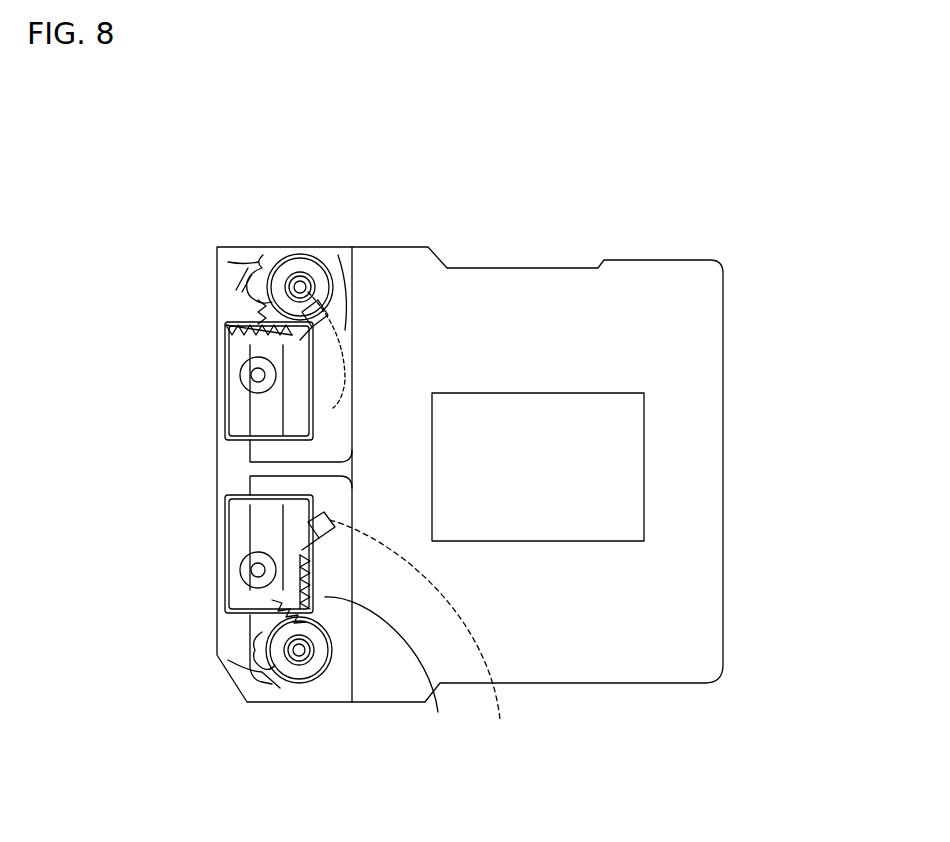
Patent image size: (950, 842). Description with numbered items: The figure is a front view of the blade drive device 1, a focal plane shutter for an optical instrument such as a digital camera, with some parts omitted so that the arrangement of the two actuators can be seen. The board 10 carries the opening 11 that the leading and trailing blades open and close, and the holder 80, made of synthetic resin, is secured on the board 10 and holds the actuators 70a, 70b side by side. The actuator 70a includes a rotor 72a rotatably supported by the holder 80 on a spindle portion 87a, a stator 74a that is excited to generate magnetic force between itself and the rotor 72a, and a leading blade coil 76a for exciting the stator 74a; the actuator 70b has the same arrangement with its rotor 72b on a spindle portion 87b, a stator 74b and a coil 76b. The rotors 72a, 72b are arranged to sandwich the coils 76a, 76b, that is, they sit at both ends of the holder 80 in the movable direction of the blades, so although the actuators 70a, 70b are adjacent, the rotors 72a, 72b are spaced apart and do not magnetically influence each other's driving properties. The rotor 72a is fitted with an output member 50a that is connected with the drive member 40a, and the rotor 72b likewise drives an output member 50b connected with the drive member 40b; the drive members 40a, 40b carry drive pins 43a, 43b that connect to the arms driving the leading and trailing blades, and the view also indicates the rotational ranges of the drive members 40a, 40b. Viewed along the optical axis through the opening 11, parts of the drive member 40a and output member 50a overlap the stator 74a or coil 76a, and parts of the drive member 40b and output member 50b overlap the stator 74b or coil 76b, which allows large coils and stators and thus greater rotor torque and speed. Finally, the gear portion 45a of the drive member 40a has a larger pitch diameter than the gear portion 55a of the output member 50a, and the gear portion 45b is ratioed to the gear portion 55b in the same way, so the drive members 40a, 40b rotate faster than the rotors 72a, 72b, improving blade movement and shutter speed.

The blade drive device 1 is at (712, 200).
The board 10 is at (742, 592).
The opening 11 is at (500, 392).
The drive member 40a is at (255, 570).
The drive member 40b is at (255, 375).
The drive pin 43a is at (500, 720).
The drive pin 43b is at (352, 286).
The gear portion 45a is at (280, 600).
The gear portion 45b is at (245, 335).
The output member 50a is at (355, 633).
The output member 50b is at (250, 287).
The gear portion 55a is at (438, 712).
The gear portion 55b is at (310, 302).
The actuator 70a is at (240, 652).
The actuator 70b is at (257, 246).
The rotor 72a is at (300, 684).
The rotor 72b is at (300, 255).
The stator 74a is at (262, 700).
The stator 74b is at (240, 280).
The leading blade coil 76a is at (305, 530).
The coil 76b is at (300, 392).
The holder 80 is at (207, 630).
The spindle portion 87a is at (304, 652).
The spindle portion 87b is at (304, 286).